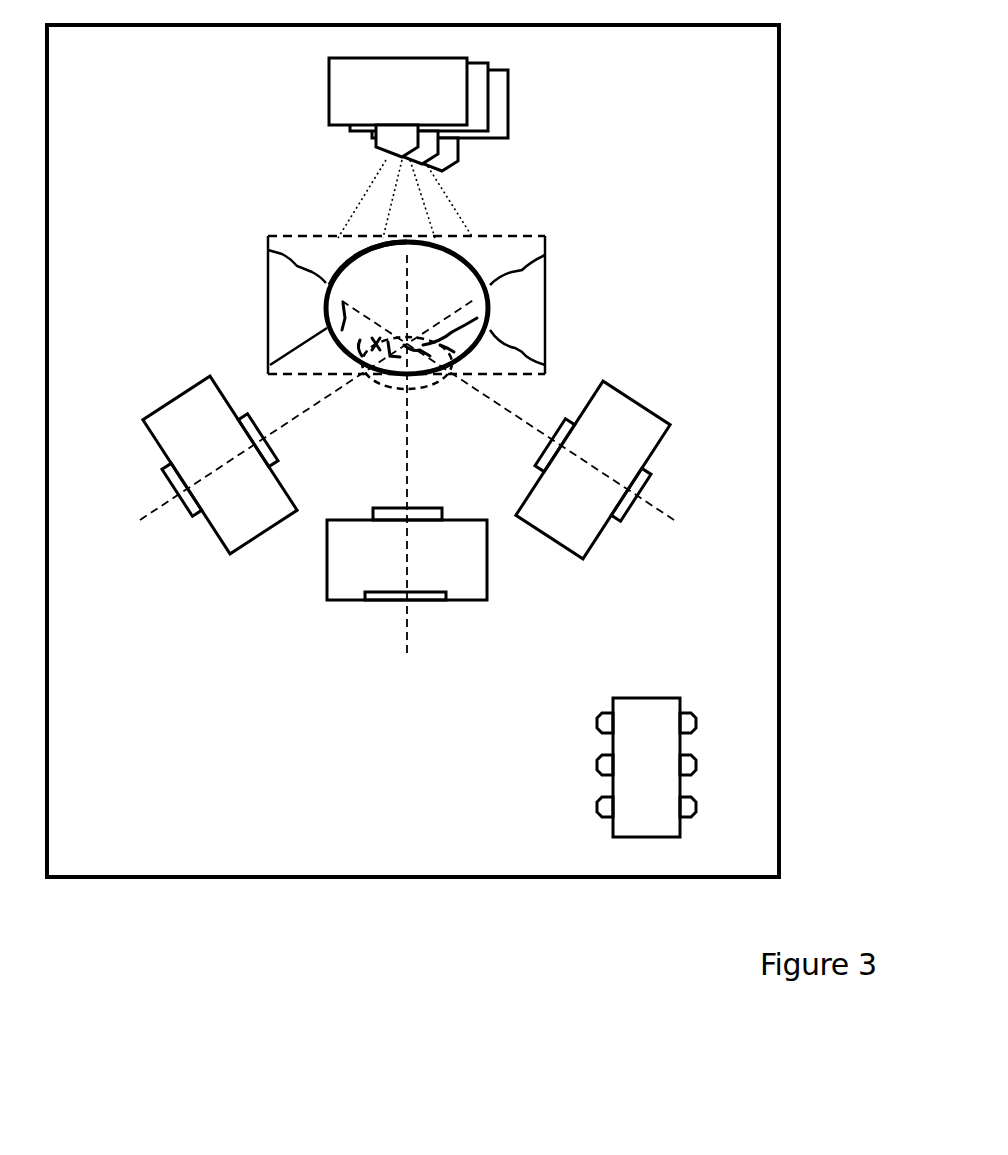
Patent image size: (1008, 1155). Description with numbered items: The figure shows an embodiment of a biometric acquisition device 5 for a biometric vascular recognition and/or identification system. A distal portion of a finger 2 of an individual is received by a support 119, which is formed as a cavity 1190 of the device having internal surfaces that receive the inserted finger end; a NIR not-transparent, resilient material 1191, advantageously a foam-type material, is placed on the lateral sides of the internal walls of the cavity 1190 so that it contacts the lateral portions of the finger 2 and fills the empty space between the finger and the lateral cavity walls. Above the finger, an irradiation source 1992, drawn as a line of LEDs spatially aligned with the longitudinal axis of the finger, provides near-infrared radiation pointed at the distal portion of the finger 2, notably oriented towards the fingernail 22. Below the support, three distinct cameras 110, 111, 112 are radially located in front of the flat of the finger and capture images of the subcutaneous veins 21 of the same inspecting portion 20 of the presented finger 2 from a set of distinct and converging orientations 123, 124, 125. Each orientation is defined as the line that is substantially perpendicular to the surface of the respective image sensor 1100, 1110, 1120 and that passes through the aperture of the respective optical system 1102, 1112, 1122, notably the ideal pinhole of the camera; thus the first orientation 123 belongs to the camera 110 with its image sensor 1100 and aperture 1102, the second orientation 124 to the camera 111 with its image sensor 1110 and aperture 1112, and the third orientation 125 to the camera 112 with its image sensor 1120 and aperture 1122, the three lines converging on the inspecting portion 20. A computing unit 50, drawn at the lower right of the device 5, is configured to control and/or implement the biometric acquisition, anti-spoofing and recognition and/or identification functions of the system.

The biometric acquisition device 5 is at (804, 122).
The irradiation source 1992 is at (450, 72).
The distal portion of a finger 2 is at (499, 247).
The fingernail 22 is at (345, 253).
The subcutaneous veins 21 is at (343, 335).
The inspecting portion 20 is at (435, 388).
The support 119 is at (580, 270).
The cavity 1190 is at (313, 252).
The NIR not-transparent resilient material 1191 is at (530, 330).
The camera 110 is at (235, 527).
The image sensor 1100 is at (185, 479).
The aperture of the optical system 1102 is at (243, 422).
The camera 111 is at (450, 570).
The image sensor 1110 is at (393, 598).
The aperture of the optical system 1112 is at (395, 512).
The camera 112 is at (620, 435).
The image sensor 1120 is at (617, 507).
The aperture of the optical system 1122 is at (583, 415).
The orientation 123 is at (143, 515).
The orientation 124 is at (407, 613).
The orientation 125 is at (643, 505).
The computing unit 50 is at (637, 745).